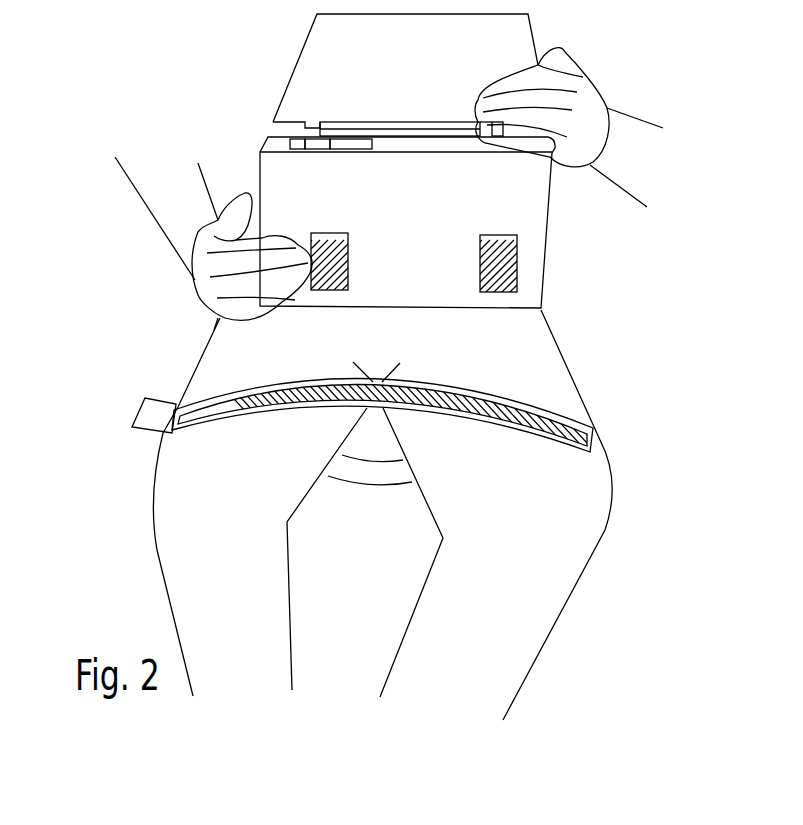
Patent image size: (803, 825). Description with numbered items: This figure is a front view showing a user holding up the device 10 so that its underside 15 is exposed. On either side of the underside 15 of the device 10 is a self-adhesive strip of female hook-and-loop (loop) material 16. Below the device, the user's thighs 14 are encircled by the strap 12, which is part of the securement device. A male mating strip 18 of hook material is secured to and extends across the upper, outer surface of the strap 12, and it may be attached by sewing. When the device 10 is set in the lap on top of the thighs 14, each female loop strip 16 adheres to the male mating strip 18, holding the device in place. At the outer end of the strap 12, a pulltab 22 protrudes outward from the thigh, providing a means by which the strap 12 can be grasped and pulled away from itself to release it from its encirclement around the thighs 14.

The device 10 is at (530, 26).
The underside 15 is at (268, 181).
The self-adhesive strip of female hook-and-loop material 16 is at (495, 233).
The thighs 14 is at (205, 363).
The strap 12 is at (577, 418).
The male mating strip 18 is at (537, 415).
The pulltab 22 is at (140, 412).